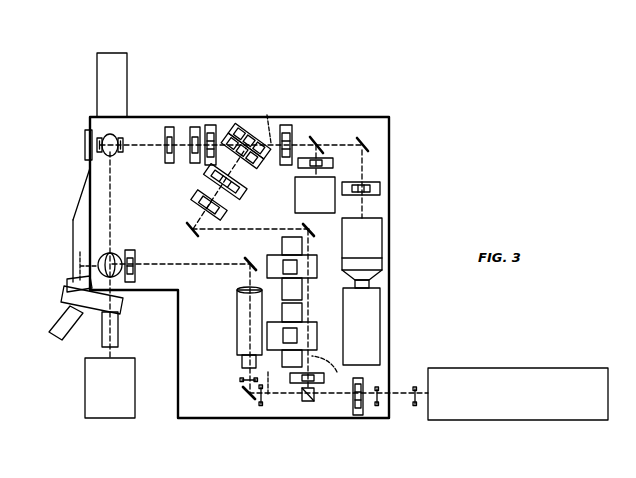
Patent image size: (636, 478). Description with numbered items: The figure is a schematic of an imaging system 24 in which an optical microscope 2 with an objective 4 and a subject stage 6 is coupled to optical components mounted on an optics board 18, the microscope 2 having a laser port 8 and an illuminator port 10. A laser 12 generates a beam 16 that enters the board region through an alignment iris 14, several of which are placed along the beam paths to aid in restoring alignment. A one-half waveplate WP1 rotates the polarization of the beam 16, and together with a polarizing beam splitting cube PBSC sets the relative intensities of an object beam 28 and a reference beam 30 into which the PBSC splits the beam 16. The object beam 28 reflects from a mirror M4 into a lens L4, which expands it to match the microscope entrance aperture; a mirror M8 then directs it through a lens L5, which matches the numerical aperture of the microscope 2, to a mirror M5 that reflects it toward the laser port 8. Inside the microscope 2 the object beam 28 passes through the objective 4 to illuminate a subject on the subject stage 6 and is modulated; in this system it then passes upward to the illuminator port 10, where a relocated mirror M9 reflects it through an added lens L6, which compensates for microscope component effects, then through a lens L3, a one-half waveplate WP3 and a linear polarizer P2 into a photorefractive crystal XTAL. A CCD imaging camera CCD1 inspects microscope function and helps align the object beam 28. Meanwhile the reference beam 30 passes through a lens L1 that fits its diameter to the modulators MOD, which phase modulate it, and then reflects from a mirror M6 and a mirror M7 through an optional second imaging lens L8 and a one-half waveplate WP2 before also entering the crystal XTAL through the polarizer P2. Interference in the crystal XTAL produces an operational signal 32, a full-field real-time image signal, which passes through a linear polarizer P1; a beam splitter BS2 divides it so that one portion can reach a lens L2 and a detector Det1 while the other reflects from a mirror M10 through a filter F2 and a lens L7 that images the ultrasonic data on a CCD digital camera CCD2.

The optical microscope 2 is at (86, 70).
The objective 4 is at (119, 330).
The subject stage 6 is at (114, 395).
The laser port 8 is at (78, 272).
The illuminator port 10 is at (85, 138).
The laser 12 is at (502, 400).
The alignment iris 14 is at (240, 380).
The beam 16 is at (400, 395).
The optics board 18 is at (345, 117).
The imaging system 24 is at (430, 93).
The object beam 28 is at (270, 377).
The reference beam 30 is at (331, 370).
The operational signal 32 is at (272, 121).
The CCD imaging camera CCD1 is at (128, 73).
The CCD digital camera CCD2 is at (381, 316).
The lens L1 is at (320, 384).
The lens L2 is at (334, 163).
The lens L3 is at (192, 125).
The lens L4 is at (237, 323).
The lens L5 is at (137, 277).
The lens L6 is at (167, 124).
The lens L7 is at (370, 249).
The second imaging lens L8 is at (197, 199).
The one-half waveplate WP1 is at (358, 415).
The one-half waveplate WP2 is at (232, 197).
The one-half waveplate WP3 is at (210, 123).
The linear polarizer P1 is at (287, 124).
The linear polarizer P2 is at (232, 125).
The photorefractive crystal XTAL is at (253, 123).
The beam splitter BS2 is at (315, 135).
The mirror M4 is at (245, 397).
The mirror M5 is at (114, 252).
The mirror M6 is at (313, 231).
The mirror M7 is at (190, 233).
The mirror M8 is at (250, 260).
The mirror M9 is at (118, 152).
The mirror M10 is at (368, 143).
The detector Det1 is at (330, 203).
The filter F2 is at (381, 188).
The modulators MOD is at (318, 250).
The polarizing beam splitting cube PBSC is at (308, 402).